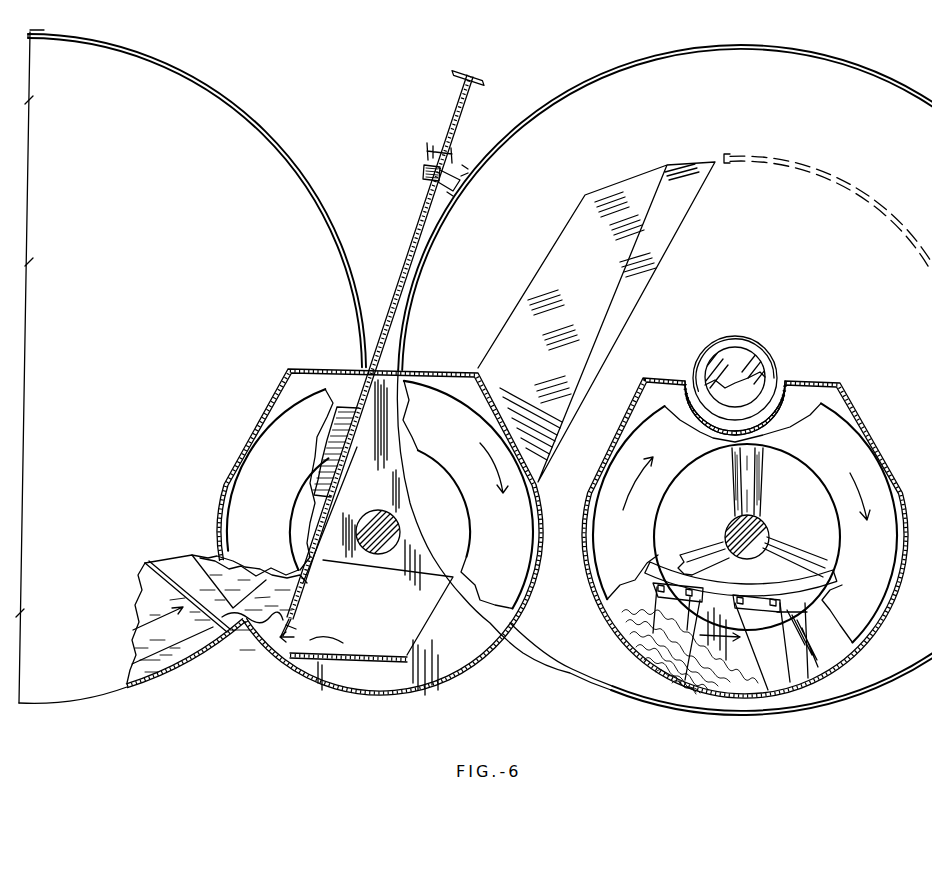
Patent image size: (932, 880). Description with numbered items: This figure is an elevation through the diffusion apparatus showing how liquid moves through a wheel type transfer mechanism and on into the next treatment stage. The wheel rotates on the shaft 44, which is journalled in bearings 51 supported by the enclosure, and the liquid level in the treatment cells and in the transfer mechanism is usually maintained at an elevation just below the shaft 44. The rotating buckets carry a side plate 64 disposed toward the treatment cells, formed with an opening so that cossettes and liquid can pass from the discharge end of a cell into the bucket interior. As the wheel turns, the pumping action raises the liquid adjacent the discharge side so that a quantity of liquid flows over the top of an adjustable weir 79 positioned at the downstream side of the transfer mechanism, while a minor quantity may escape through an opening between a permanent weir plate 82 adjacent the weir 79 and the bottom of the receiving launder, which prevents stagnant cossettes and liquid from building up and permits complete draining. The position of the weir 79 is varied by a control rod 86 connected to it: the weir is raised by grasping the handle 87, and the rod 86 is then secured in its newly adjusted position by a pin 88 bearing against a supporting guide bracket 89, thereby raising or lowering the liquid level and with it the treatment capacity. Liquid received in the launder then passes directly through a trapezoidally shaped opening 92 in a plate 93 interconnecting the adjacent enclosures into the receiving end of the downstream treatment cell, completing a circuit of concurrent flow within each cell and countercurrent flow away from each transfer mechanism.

The shaft 44 is at (752, 388).
The bearings 51 is at (750, 368).
The side plate 64 is at (623, 603).
The adjustable weir 79 is at (347, 430).
The permanent weir plate 82 is at (300, 615).
The control rod 86 is at (416, 230).
The handle 87 is at (473, 75).
The pin 88 is at (426, 149).
The supporting guide bracket 89 is at (424, 172).
The trapezoidally shaped opening 92 is at (370, 647).
The plate 93 is at (463, 643).